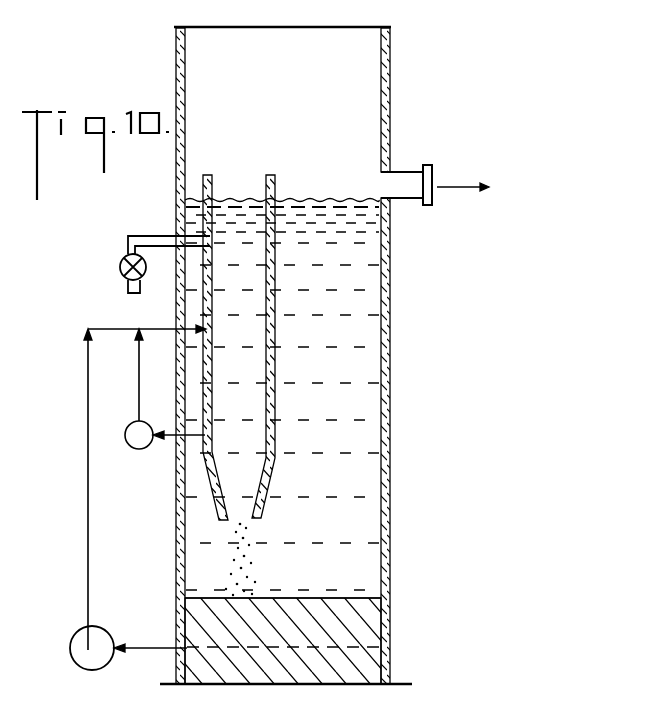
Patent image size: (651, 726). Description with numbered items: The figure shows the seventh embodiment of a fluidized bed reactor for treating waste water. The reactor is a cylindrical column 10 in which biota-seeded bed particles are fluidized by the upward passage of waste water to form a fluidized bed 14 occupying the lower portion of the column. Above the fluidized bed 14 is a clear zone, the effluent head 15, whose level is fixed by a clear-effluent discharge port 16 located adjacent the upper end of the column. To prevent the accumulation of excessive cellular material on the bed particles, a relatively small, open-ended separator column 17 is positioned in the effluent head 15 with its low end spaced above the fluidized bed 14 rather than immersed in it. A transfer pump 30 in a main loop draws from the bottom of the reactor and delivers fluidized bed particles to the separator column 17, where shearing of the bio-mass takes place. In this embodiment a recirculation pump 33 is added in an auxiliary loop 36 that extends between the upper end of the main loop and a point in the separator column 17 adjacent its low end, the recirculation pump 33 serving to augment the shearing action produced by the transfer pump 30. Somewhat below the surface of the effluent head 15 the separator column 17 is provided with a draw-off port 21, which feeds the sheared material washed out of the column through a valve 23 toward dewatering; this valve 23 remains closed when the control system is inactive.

The cylindrical column 10 is at (390, 99).
The fluidized bed 14 is at (370, 621).
The effluent head 15 is at (320, 202).
The clear-effluent discharge port 16 is at (403, 200).
The separator column 17 is at (272, 175).
The draw-off port 21 is at (145, 237).
The valve 23 is at (120, 267).
The transfer pump 30 is at (84, 664).
The recirculation pump 33 is at (139, 449).
The auxiliary loop 36 is at (139, 383).